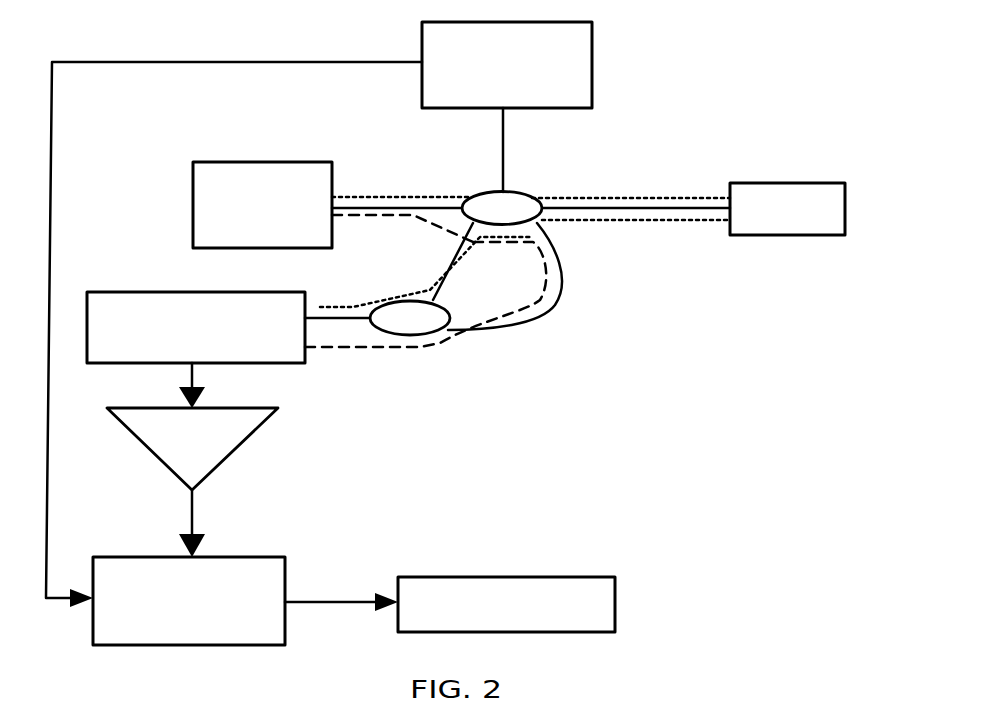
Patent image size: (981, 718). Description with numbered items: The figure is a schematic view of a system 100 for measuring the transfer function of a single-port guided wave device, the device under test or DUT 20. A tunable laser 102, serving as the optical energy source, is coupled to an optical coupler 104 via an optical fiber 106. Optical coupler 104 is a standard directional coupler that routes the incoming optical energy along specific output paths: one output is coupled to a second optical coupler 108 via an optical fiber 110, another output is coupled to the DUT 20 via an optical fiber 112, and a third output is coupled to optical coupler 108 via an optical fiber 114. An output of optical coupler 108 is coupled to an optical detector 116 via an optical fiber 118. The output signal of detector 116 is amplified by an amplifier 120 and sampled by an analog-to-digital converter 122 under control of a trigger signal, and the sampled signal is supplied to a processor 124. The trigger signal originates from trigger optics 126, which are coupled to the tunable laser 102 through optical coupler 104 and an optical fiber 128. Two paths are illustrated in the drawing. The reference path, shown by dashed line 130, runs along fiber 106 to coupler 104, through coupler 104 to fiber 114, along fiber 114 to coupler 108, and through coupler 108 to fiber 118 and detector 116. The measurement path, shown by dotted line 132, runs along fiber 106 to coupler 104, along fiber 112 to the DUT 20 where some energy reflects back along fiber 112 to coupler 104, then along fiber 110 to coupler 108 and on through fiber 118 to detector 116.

The system 100 is at (660, 403).
The tunable laser 102 is at (262, 184).
The optical coupler 104 is at (437, 212).
The optical fiber 106 is at (401, 180).
The optical coupler 108 is at (440, 353).
The optical fiber 110 is at (402, 236).
The optical fiber 112 is at (650, 154).
The optical fiber 114 is at (547, 283).
The optical detector 116 is at (189, 300).
The optical fiber 118 is at (313, 288).
The amplifier 120 is at (186, 459).
The analog-to-digital converter 122 is at (220, 572).
The processor 124 is at (506, 581).
The trigger optics 126 is at (559, 65).
The optical fiber 128 is at (555, 150).
The dashed line 130 is at (390, 395).
The dotted line 132 is at (535, 263).
The device under test 20 is at (787, 185).